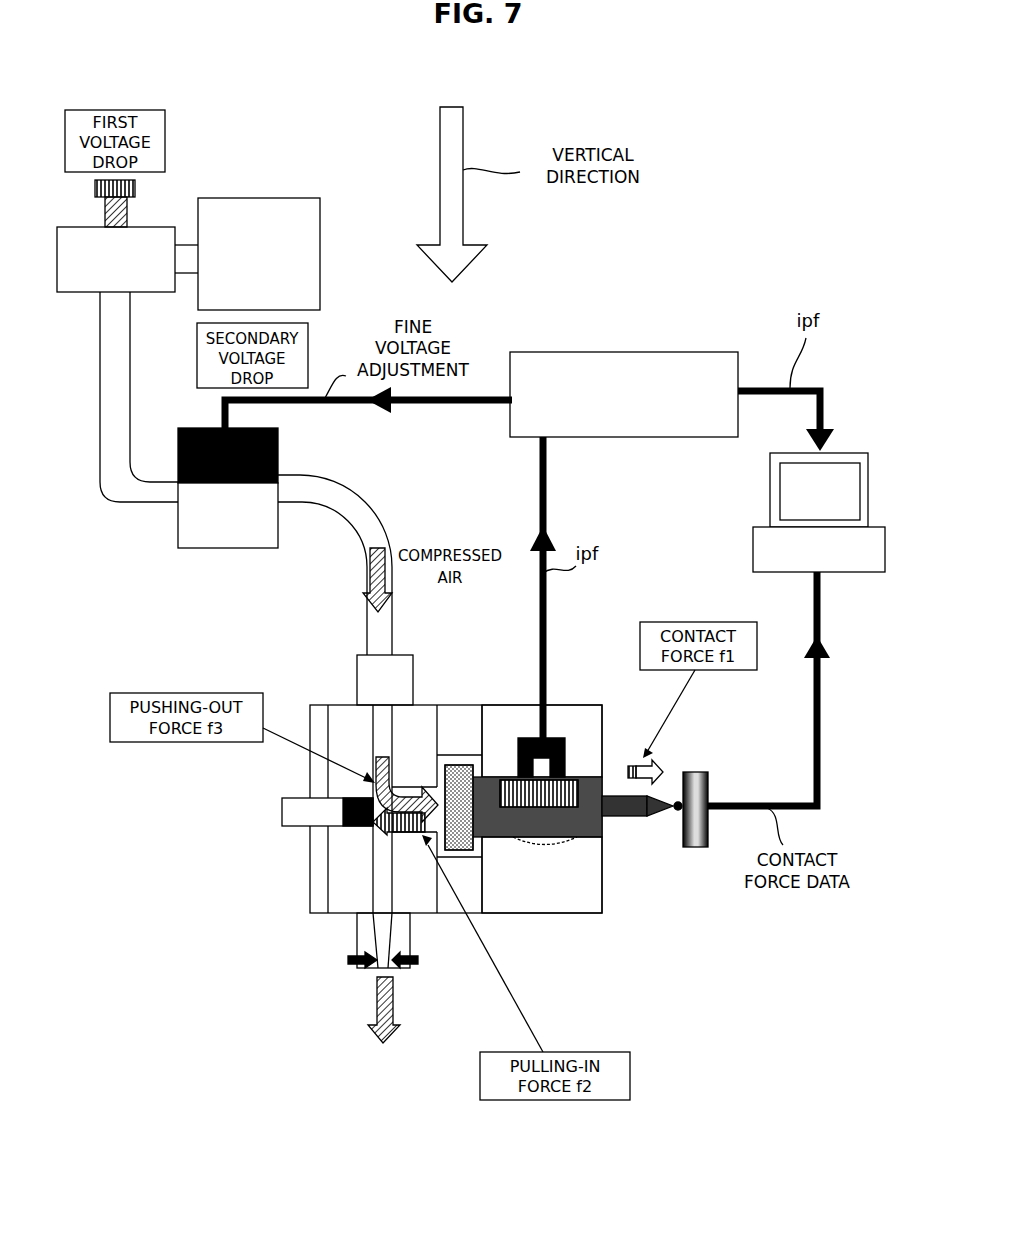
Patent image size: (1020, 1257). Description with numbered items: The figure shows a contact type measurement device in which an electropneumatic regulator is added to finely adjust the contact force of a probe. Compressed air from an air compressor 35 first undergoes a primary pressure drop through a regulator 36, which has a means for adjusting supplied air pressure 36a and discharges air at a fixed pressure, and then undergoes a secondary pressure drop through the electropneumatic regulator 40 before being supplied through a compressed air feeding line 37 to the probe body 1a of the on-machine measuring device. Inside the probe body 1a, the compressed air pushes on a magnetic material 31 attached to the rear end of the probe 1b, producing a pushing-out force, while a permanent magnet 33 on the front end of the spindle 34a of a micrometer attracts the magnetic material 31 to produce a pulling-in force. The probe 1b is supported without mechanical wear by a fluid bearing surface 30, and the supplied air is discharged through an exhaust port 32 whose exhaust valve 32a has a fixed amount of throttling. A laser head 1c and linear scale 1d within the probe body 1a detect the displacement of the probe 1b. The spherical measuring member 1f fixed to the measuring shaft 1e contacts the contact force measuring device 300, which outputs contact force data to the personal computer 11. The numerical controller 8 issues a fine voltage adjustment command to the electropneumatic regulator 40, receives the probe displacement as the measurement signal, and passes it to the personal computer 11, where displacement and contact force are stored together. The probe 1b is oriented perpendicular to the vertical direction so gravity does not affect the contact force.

The means for adjusting supplied air pressure 36a is at (135, 188).
The air compressor 35 is at (319, 198).
The regulator 36 is at (146, 294).
The electropneumatic regulator 40 is at (230, 549).
The compressed air feeding line 37 is at (352, 497).
The numerical controller 8 is at (660, 352).
The personal computer 11 is at (753, 547).
The contact force measuring device 300 is at (708, 772).
The probe body 1a is at (497, 737).
The probe 1b is at (600, 832).
The laser head 1c is at (523, 740).
The linear scale 1d is at (570, 780).
The measuring shaft 1e is at (633, 816).
The spherical measuring member 1f is at (678, 812).
The spindle 34a is at (282, 798).
The permanent magnet 33 is at (362, 827).
The magnetic material 31 is at (462, 843).
The fluid bearing surface 30 is at (563, 843).
The exhaust port 32 is at (400, 971).
The exhaust valve 32a is at (410, 956).